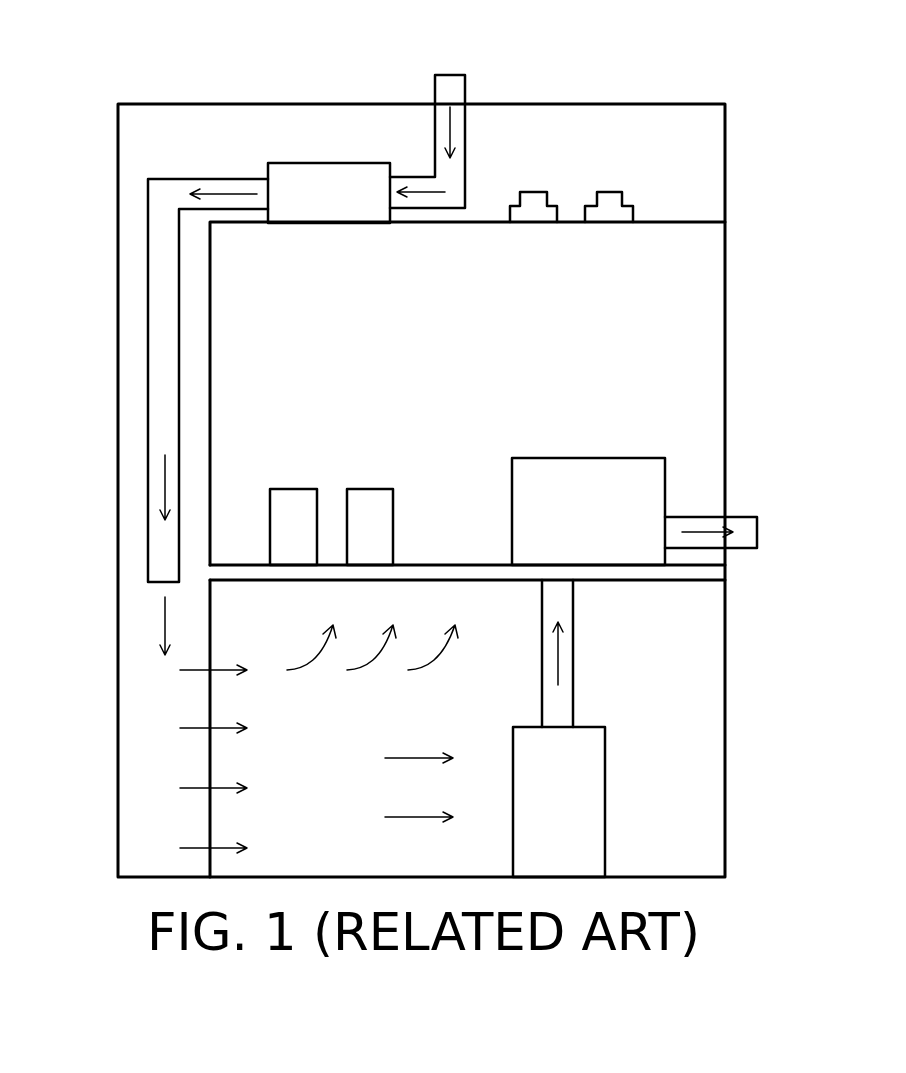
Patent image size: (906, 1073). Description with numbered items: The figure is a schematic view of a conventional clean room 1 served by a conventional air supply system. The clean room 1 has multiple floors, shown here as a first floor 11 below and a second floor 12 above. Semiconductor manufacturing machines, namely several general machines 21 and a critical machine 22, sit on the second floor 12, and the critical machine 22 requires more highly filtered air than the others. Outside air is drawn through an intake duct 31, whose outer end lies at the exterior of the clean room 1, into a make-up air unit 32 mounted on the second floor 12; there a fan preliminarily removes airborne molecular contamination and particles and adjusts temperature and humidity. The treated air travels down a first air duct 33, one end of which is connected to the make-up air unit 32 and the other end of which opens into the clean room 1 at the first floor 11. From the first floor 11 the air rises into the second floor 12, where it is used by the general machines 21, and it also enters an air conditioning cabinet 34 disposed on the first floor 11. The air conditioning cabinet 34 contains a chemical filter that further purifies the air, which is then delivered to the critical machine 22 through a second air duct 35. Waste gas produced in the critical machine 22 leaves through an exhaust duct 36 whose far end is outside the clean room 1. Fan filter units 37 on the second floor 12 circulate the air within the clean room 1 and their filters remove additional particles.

The clean room 1 is at (737, 303).
The first floor 11 is at (712, 638).
The second floor 12 is at (712, 368).
The general machines 21 is at (293, 505).
The critical machine 22 is at (587, 475).
The intake duct 31 is at (440, 120).
The make-up air unit 32 is at (328, 185).
The first air duct 33 is at (165, 343).
The air conditioning cabinet 34 is at (575, 800).
The second air duct 35 is at (560, 707).
The exhaust duct 36 is at (685, 525).
The fan filter units 37 is at (533, 195).